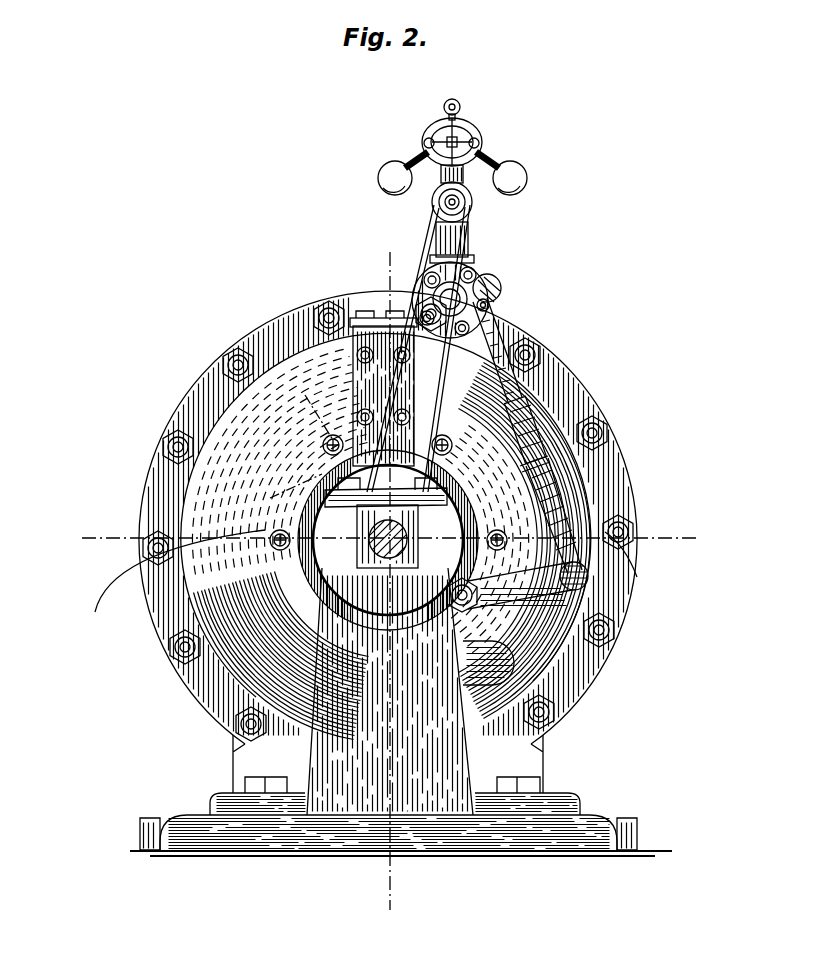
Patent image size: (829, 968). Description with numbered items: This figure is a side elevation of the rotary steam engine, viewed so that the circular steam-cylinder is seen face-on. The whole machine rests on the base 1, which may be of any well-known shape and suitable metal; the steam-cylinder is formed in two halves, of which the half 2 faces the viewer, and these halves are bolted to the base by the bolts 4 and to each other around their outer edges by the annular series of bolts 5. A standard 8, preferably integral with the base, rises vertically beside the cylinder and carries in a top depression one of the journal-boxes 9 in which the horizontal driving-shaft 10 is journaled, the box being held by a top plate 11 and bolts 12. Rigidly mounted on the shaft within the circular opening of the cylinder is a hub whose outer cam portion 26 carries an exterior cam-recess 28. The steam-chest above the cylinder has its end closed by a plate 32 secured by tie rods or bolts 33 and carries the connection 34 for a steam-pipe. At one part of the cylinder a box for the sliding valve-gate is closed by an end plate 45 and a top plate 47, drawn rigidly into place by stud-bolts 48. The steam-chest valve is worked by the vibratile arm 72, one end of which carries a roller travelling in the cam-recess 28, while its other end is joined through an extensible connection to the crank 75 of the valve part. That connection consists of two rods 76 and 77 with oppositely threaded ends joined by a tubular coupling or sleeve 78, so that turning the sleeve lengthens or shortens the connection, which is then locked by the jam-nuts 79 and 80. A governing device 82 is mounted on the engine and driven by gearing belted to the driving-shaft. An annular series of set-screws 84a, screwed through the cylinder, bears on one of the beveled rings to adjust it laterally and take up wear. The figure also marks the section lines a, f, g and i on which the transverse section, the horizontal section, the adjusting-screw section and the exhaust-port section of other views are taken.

The base 1 is at (450, 832).
The steam-cylinder half 2 is at (545, 640).
The bolts 4 is at (262, 780).
The annular series of bolts 5 is at (238, 365).
The standard 8 is at (360, 782).
The journal-boxes 9 is at (345, 552).
The driving-shaft 10 is at (447, 493).
The top plates 11 is at (436, 460).
The bolts 12 is at (322, 480).
The cam portion 26 is at (470, 512).
The cam-recess 28 is at (372, 556).
The end plate 32 is at (500, 308).
The tie rods or bolts 33 is at (468, 268).
The steam-pipe connection 34 is at (466, 245).
The end plate 45 is at (372, 392).
The top plate 47 is at (366, 314).
The stud-bolts 48 is at (394, 314).
The vibratile arm 72 is at (605, 576).
The crank 75 is at (490, 292).
The rod 76 is at (530, 352).
The rod 77 is at (555, 522).
The tubular coupling or sleeve 78 is at (548, 412).
The jam-nut 79 is at (538, 398).
The jam-nut 80 is at (604, 432).
The governing device 82 is at (474, 150).
The set-screws 84a is at (375, 585).
The section line a a is at (377, 574).
The section line f f is at (381, 541).
The section line g g is at (294, 441).
The section line i i is at (560, 688).